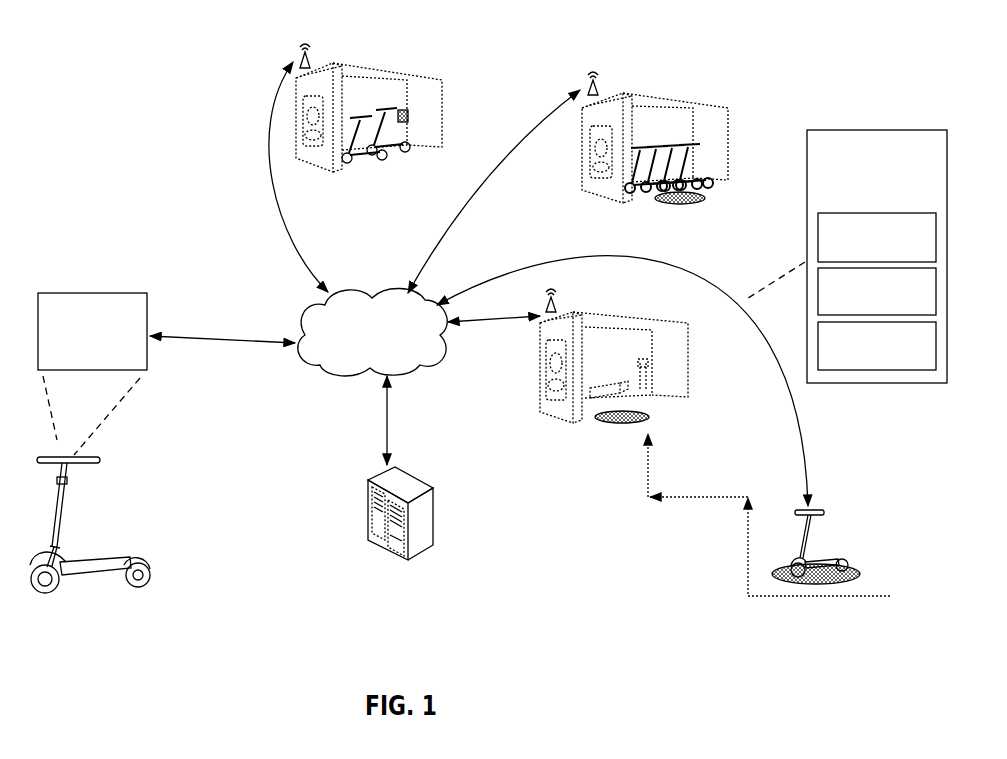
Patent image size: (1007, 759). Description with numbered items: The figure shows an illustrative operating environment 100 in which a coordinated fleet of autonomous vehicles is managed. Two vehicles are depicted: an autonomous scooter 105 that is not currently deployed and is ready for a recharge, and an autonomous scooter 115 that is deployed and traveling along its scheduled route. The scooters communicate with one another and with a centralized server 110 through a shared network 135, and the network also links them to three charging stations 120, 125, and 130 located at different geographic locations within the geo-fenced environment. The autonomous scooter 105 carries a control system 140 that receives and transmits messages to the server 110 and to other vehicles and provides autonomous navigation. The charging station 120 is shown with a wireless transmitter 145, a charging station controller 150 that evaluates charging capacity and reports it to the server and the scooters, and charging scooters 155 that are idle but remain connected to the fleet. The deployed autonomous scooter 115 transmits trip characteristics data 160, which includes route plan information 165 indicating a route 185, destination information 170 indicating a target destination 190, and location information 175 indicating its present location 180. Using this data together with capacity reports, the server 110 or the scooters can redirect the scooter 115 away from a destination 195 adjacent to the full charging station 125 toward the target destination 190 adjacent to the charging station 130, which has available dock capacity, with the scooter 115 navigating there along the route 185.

The operating environment 100 is at (884, 93).
The autonomous scooter 105 is at (92, 558).
The server 110 is at (403, 562).
The autonomous scooter 115 is at (825, 500).
The charging station 120 is at (397, 116).
The charging station 125 is at (683, 140).
The charging station 130 is at (629, 355).
The shared network 135 is at (372, 331).
The control system 140 is at (92, 331).
The wireless transmitter 145 is at (310, 68).
The charging station controller 150 is at (405, 118).
The charging scooters 155 is at (375, 165).
The trip characteristics data 160 is at (883, 256).
The route plan information 165 is at (877, 346).
The destination information 170 is at (877, 291).
The location information 175 is at (877, 237).
The present location 180 is at (858, 575).
The route 185 is at (718, 495).
The target destination 190 is at (650, 416).
The destination 195 is at (706, 200).